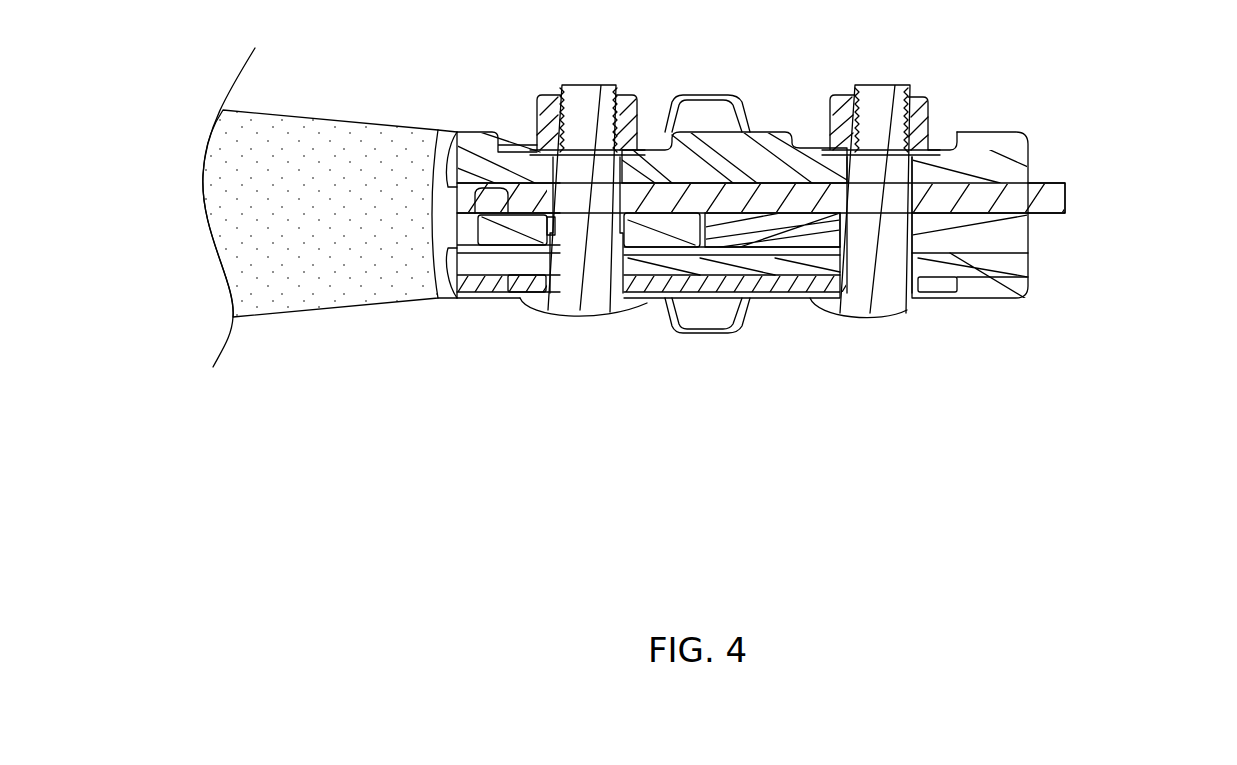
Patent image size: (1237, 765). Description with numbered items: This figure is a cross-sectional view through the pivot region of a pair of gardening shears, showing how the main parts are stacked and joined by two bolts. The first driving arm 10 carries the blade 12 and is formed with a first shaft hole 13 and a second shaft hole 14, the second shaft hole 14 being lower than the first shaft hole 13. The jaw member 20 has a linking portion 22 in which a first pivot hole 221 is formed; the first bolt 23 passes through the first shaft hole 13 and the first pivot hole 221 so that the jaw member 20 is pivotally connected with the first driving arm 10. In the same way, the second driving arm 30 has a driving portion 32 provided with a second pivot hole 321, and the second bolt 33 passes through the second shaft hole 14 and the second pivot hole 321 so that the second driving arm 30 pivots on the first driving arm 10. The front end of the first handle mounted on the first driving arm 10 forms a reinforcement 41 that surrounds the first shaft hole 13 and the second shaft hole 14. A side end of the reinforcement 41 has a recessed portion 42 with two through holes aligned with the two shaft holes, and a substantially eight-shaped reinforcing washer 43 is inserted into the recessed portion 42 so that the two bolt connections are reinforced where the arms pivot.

The first driving arm 10 is at (1085, 193).
The blade 12 is at (1042, 203).
The first shaft hole 13 is at (915, 180).
The second shaft hole 14 is at (650, 182).
The jaw member 20 is at (1043, 247).
The linking portion 22 is at (1020, 225).
The first pivot hole 221 is at (920, 242).
The first bolt 23 is at (882, 290).
The second driving arm 30 is at (492, 200).
The driving portion 32 is at (648, 232).
The second pivot hole 321 is at (527, 258).
The second bolt 33 is at (573, 280).
The reinforcement 41 is at (992, 277).
The recessed portion 42 is at (710, 280).
The reinforcing washer 43 is at (775, 287).